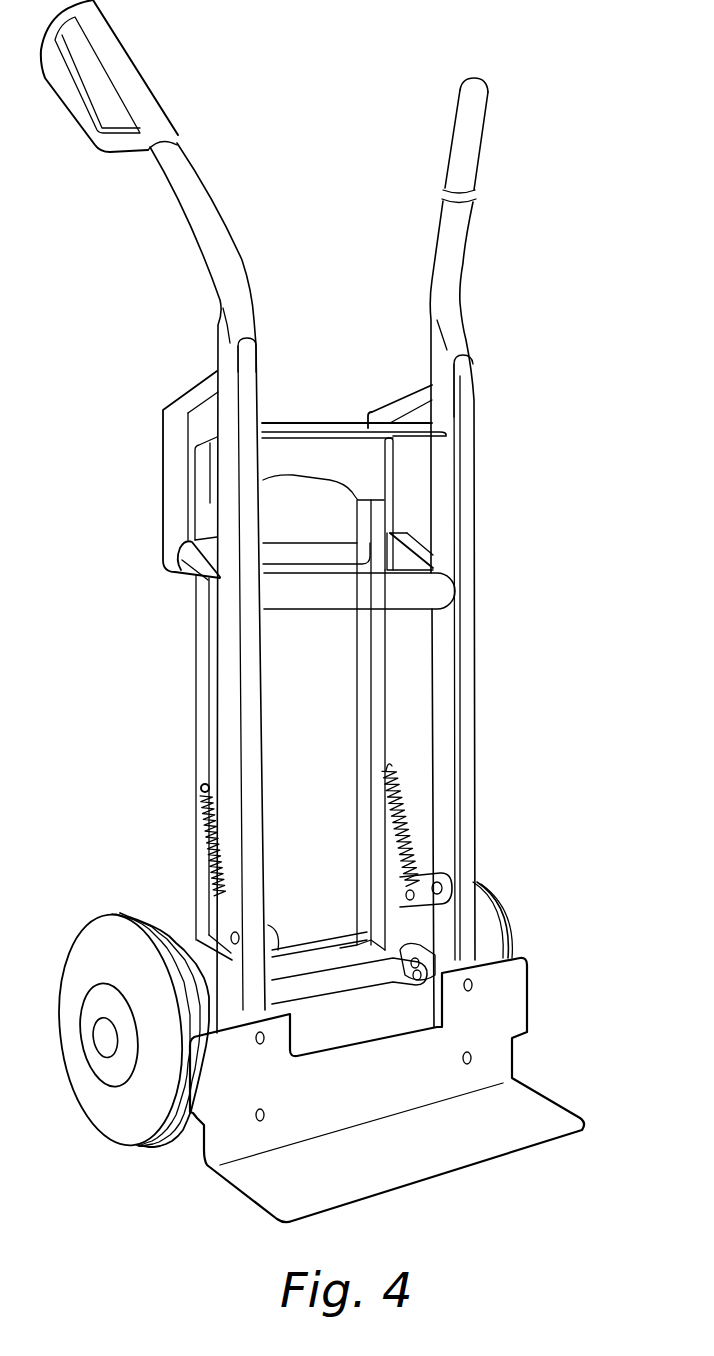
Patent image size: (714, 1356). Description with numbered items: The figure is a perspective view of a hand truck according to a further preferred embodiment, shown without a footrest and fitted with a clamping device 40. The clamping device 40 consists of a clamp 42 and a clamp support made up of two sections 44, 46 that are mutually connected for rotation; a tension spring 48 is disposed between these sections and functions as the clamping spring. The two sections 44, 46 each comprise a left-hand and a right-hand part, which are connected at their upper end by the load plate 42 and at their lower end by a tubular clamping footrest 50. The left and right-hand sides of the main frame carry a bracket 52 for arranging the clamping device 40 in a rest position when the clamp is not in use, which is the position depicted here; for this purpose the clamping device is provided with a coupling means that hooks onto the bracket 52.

The clamping device 40 is at (137, 402).
The clamp 42 is at (332, 418).
The clamp support section 44 is at (197, 692).
The clamp support section 46 is at (398, 897).
The tension spring 48 is at (410, 807).
The tubular clamping footrest 50 is at (313, 947).
The bracket 52 is at (168, 489).